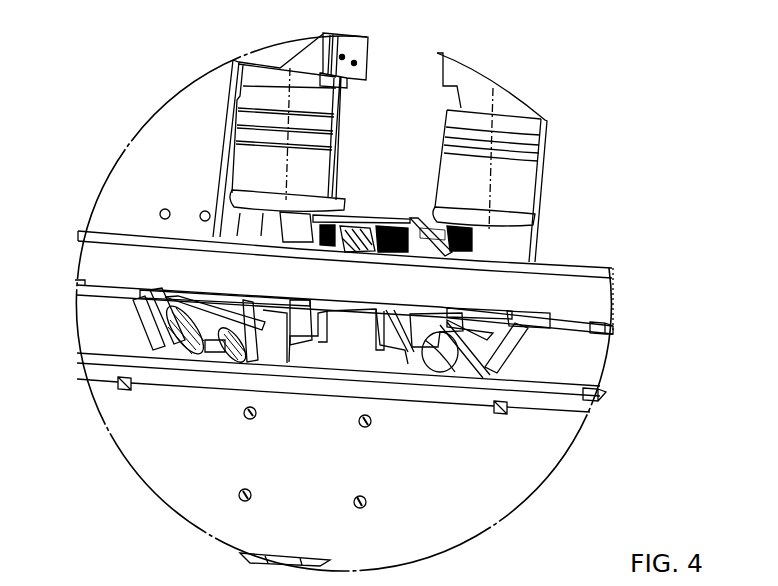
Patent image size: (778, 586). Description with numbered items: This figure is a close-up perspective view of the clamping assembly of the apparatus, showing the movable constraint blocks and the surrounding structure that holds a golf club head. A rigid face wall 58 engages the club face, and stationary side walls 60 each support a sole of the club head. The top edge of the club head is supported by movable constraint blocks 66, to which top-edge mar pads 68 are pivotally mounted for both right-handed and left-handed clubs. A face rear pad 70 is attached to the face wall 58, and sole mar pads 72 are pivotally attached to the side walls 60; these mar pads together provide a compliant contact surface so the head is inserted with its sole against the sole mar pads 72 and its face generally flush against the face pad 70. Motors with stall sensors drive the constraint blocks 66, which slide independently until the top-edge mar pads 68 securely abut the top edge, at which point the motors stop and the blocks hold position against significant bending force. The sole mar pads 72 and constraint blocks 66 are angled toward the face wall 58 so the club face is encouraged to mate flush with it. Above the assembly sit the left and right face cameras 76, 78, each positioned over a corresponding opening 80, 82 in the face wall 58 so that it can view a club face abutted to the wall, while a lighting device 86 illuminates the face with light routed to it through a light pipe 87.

The face wall 58 is at (400, 277).
The side walls 60 is at (113, 322).
The constraint blocks 66 is at (345, 355).
The top-edge mar pads 68 is at (412, 350).
The face rear pad 70 is at (410, 307).
The sole mar pads 72 is at (212, 345).
The left face camera 76 is at (523, 184).
The right face camera 78 is at (243, 166).
The opening 80 is at (457, 308).
The opening 82 is at (238, 300).
The lighting device 86 is at (430, 232).
The light pipe 87 is at (318, 213).